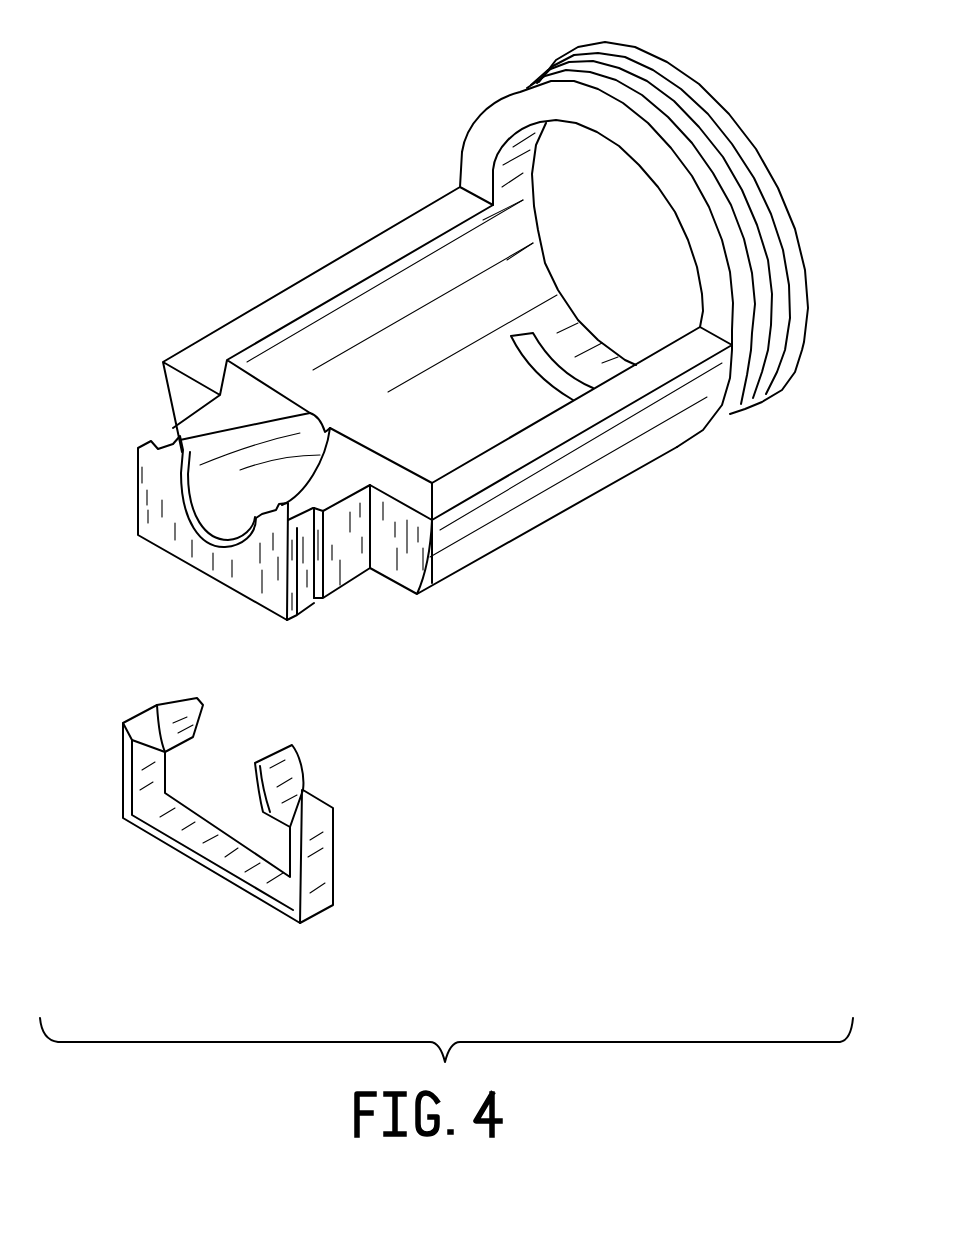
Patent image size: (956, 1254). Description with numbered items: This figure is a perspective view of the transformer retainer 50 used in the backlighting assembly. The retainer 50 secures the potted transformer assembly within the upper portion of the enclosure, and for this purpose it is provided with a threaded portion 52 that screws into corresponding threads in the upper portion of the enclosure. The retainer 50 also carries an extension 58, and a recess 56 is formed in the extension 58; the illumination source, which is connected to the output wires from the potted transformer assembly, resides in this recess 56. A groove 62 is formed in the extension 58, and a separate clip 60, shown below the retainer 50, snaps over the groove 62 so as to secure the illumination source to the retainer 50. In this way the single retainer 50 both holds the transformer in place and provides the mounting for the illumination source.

The transformer retainer 50 is at (558, 493).
The threaded portion 52 is at (707, 163).
The recess 56 is at (242, 470).
The extension 58 is at (343, 560).
The clip 60 is at (322, 873).
The groove 62 is at (305, 597).